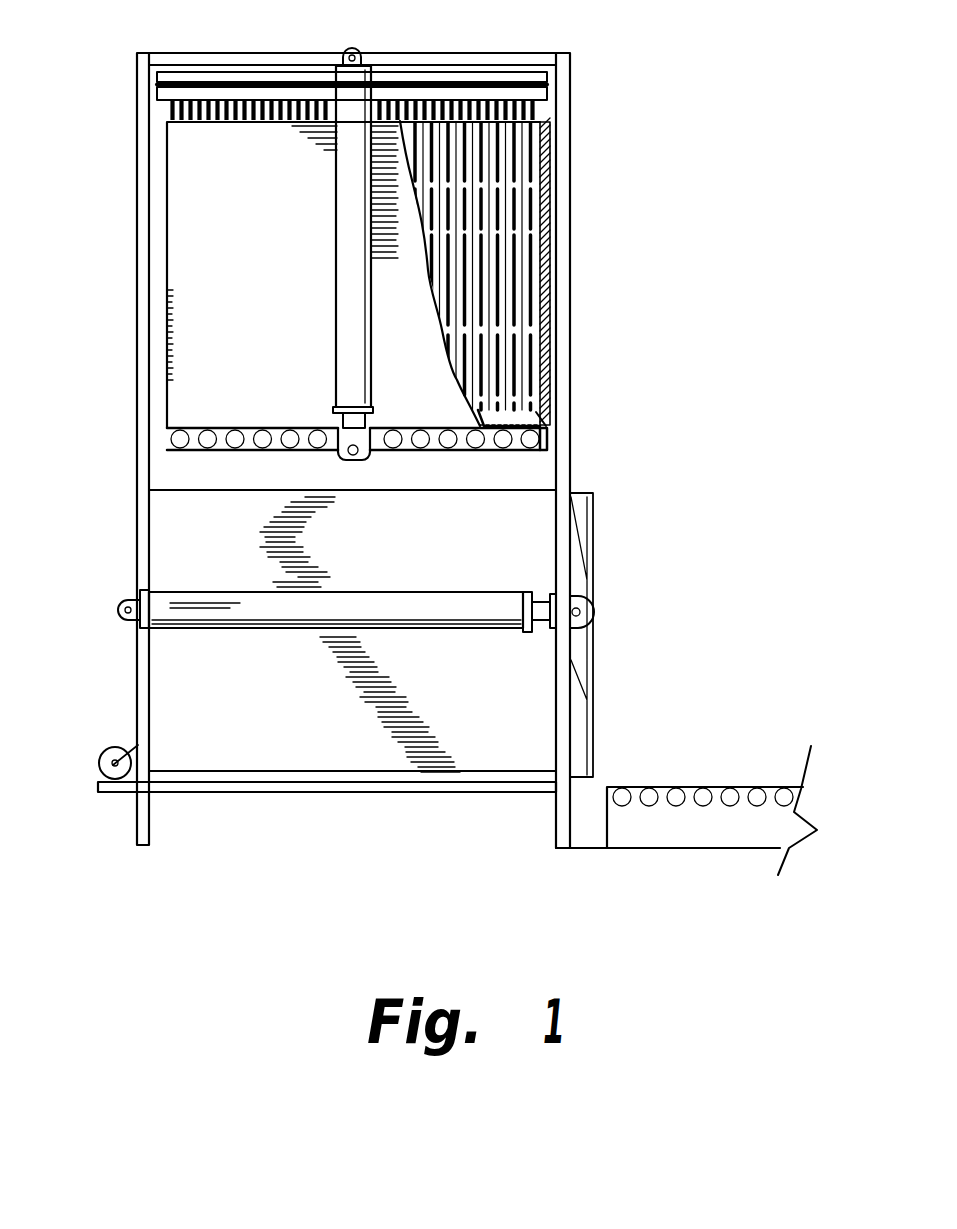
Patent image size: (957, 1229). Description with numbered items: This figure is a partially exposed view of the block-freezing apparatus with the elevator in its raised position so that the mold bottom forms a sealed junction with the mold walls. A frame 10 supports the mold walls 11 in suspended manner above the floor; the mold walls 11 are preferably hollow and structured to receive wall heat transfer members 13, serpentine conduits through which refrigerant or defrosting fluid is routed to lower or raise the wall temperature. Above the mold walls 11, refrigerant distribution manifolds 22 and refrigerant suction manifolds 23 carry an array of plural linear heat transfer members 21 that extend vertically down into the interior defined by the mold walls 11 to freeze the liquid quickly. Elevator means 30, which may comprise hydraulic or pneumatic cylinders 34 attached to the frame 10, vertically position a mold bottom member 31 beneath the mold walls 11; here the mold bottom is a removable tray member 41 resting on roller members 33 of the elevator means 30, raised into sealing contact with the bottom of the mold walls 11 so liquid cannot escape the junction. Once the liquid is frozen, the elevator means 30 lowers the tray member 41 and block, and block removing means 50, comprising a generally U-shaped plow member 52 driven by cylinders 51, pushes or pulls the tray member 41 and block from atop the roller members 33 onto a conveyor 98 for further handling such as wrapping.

The frame 10 is at (572, 294).
The mold walls 11 is at (207, 283).
The wall heat transfer members 13 is at (145, 194).
The linear heat transfer members 21 is at (512, 163).
The refrigerant distribution manifolds 22 is at (517, 78).
The refrigerant suction manifolds 23 is at (527, 95).
The elevator means 30 is at (312, 470).
The mold bottom member 31 is at (568, 420).
The roller members 33 is at (543, 440).
The cylinders 34 is at (376, 82).
The tray member 41 is at (543, 430).
The block removing means 50 is at (108, 703).
The cylinders 51 is at (168, 605).
The plow member 52 is at (205, 747).
The conveyor 98 is at (703, 787).